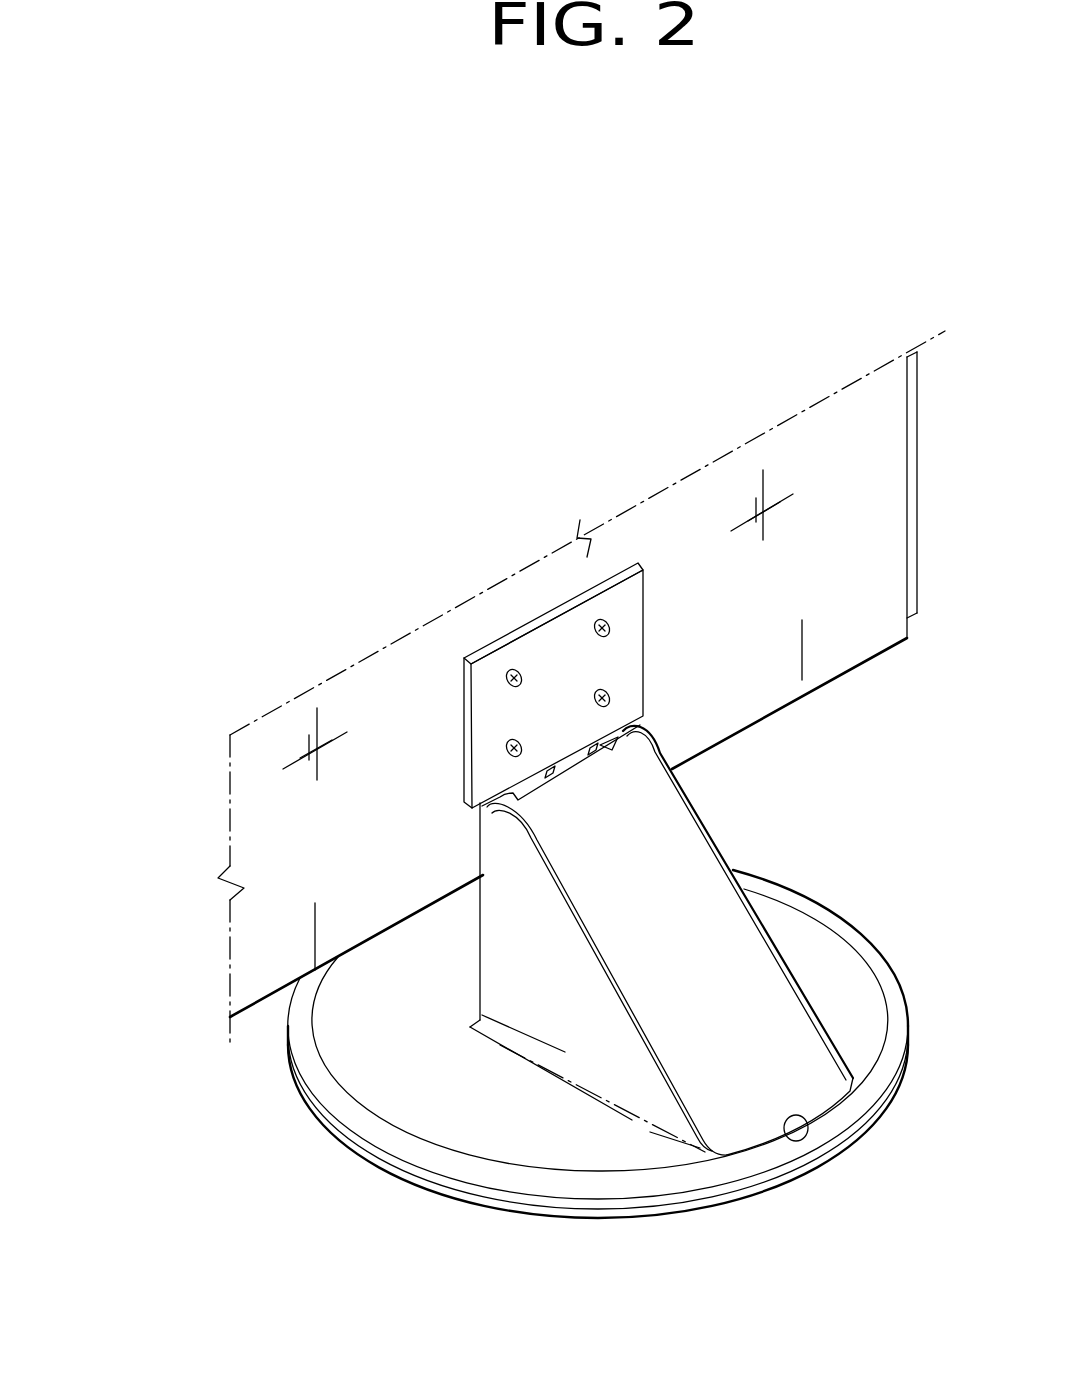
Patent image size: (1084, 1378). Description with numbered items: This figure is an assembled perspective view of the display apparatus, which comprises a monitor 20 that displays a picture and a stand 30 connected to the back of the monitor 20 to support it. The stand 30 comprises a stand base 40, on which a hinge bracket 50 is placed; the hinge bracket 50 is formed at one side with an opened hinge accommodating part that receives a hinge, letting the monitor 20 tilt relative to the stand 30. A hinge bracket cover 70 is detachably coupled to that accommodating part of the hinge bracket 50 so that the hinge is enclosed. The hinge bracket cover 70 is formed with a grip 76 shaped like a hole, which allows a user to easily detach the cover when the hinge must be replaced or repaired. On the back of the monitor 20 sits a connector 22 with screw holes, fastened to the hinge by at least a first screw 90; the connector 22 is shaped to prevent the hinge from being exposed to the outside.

The monitor 20 is at (186, 956).
The connector 22 is at (565, 604).
The stand 30 is at (357, 1192).
The stand base 40 is at (627, 1212).
The hinge bracket 50 is at (580, 1043).
The hinge bracket cover 70 is at (720, 933).
The grip 76 is at (810, 1140).
The first screw 90 is at (507, 673).